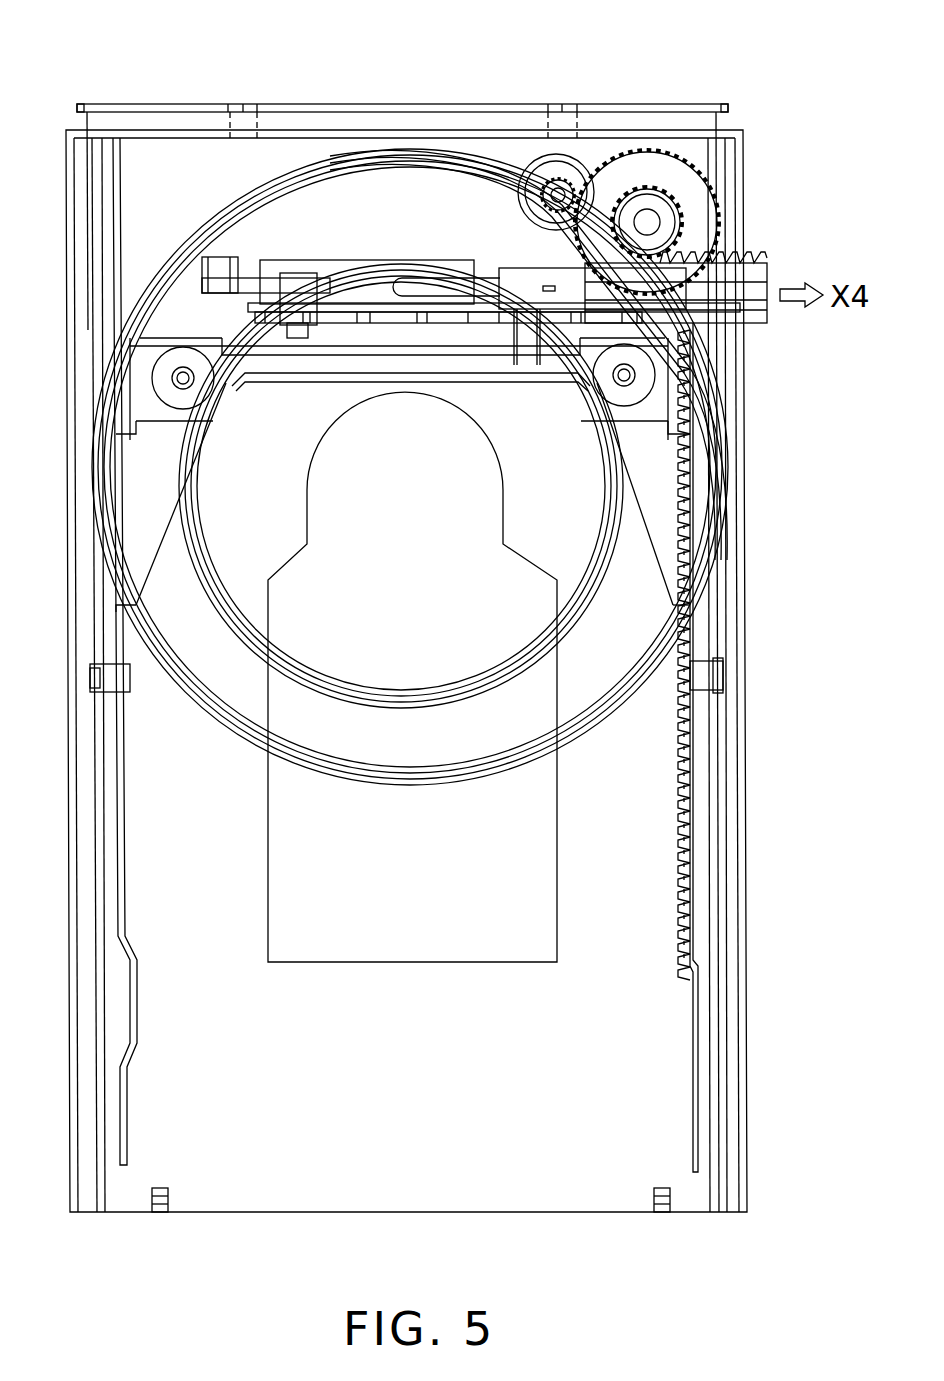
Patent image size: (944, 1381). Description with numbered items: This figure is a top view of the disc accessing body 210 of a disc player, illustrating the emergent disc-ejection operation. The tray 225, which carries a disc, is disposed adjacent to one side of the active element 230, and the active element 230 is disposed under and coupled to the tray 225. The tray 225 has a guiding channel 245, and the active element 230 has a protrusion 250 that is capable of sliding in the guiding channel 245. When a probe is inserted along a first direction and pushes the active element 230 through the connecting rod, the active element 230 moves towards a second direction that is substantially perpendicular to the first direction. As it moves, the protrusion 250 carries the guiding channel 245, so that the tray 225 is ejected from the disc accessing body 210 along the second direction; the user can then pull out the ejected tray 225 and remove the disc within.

The disc accessing body 210 is at (817, 1060).
The tray 225 is at (173, 104).
The active element 230 is at (565, 180).
The guiding channel 245 is at (515, 215).
The protrusion 250 is at (515, 265).